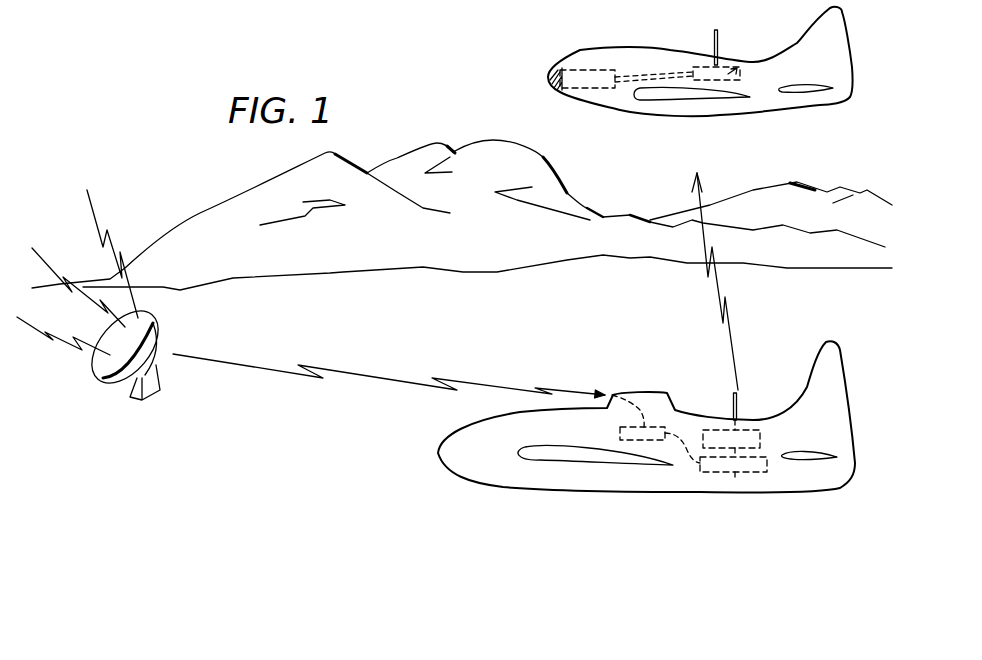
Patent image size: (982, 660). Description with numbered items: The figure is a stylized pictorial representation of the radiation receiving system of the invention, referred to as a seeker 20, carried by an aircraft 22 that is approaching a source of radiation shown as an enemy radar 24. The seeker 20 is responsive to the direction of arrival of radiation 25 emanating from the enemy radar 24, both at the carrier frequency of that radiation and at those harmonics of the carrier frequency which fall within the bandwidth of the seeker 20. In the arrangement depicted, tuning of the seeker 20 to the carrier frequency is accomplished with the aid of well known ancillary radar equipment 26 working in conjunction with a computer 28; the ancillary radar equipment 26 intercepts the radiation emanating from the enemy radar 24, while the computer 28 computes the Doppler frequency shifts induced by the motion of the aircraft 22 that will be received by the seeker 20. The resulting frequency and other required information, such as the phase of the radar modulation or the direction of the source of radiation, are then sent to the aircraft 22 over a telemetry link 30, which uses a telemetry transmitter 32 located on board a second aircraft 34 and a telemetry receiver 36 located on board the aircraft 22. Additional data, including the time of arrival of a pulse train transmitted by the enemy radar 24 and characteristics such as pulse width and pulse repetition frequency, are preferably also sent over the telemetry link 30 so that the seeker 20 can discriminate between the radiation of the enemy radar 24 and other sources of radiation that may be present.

The seeker 20 is at (580, 75).
The aircraft 22 is at (613, 57).
The telemetry receiver 36 is at (747, 55).
The enemy radar 24 is at (100, 375).
The radiation 25 is at (381, 377).
The ancillary radar equipment 26 is at (604, 418).
The computer 28 is at (735, 485).
The telemetry link 30 is at (730, 323).
The telemetry transmitter 32 is at (757, 435).
The aircraft 34 is at (453, 465).